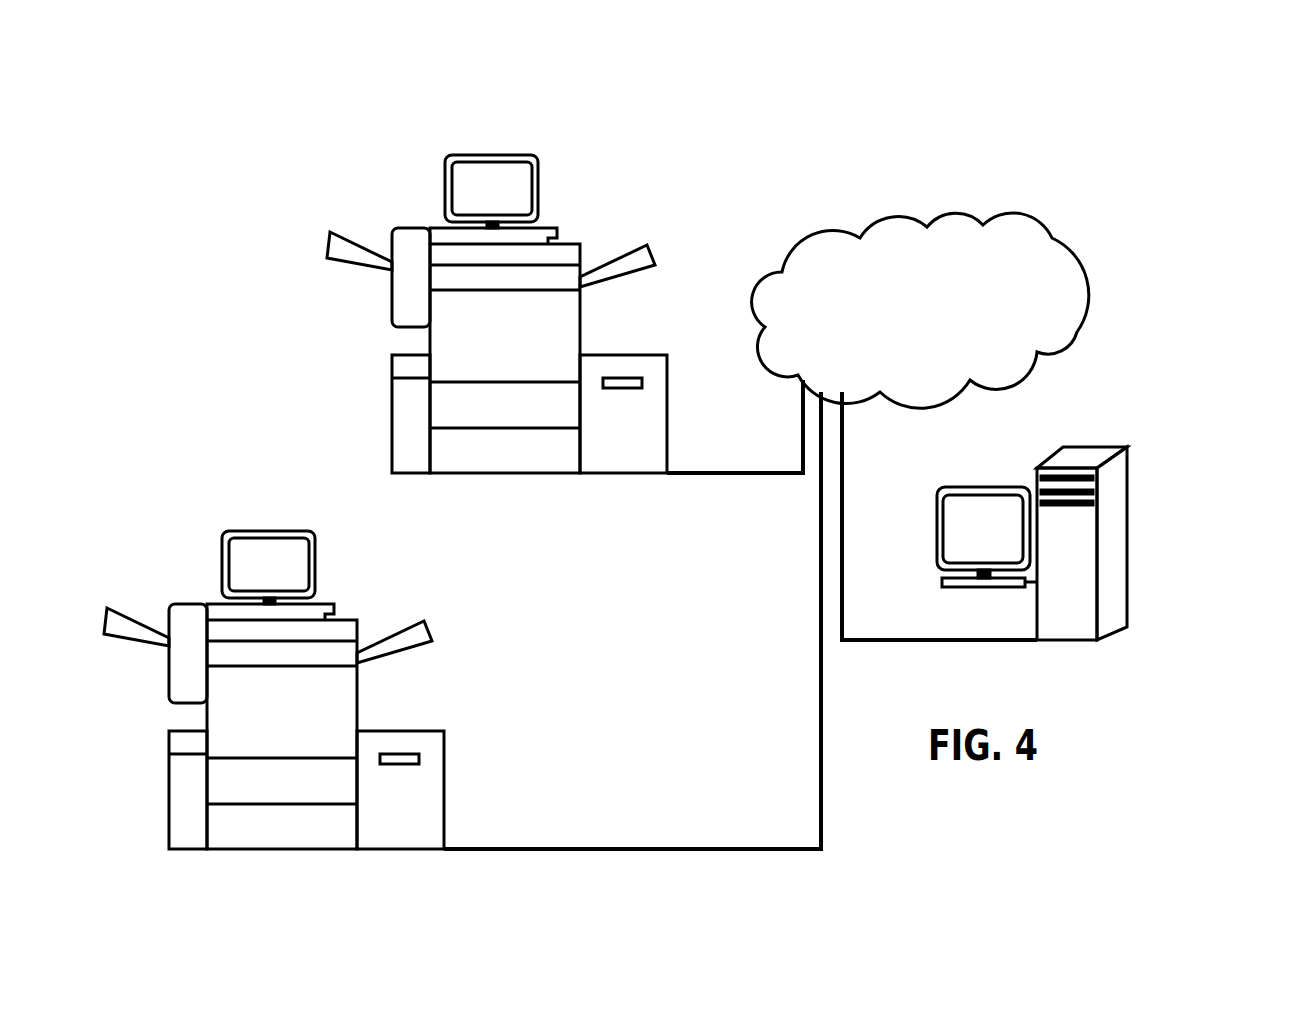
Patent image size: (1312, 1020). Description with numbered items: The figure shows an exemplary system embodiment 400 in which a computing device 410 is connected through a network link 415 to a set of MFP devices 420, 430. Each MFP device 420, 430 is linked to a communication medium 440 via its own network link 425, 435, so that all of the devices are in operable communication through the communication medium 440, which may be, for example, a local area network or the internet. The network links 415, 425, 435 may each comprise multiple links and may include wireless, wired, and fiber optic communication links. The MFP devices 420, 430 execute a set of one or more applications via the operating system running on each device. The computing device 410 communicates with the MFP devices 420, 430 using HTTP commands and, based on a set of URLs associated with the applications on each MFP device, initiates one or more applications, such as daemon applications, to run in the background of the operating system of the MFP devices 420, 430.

The system embodiment 400 is at (1172, 174).
The computing device 410 is at (1149, 418).
The network link 415 is at (844, 530).
The MFP device 420 is at (549, 137).
The network link 425 is at (763, 471).
The MFP device 430 is at (234, 490).
The network link 435 is at (819, 717).
The communication medium 440 is at (938, 366).